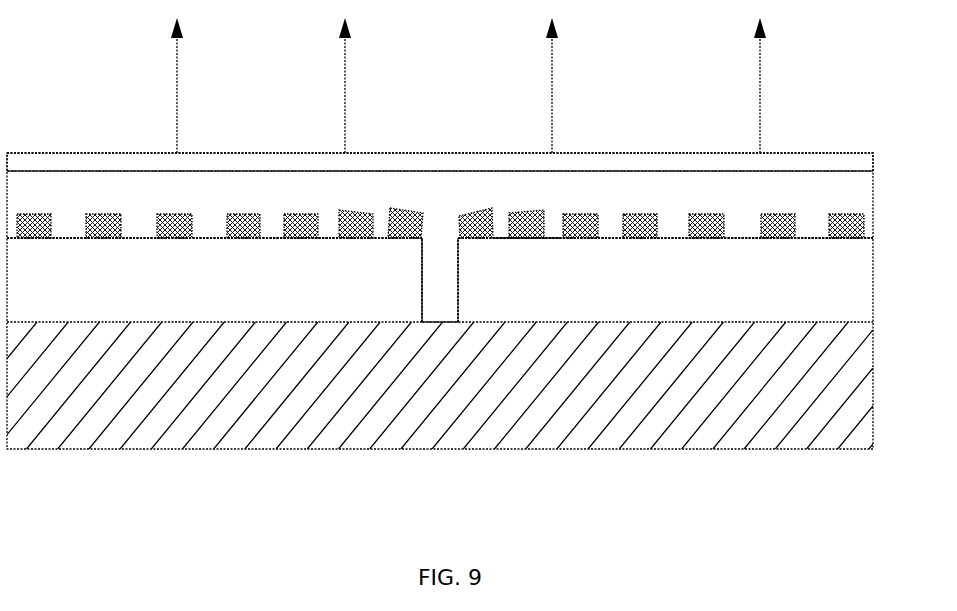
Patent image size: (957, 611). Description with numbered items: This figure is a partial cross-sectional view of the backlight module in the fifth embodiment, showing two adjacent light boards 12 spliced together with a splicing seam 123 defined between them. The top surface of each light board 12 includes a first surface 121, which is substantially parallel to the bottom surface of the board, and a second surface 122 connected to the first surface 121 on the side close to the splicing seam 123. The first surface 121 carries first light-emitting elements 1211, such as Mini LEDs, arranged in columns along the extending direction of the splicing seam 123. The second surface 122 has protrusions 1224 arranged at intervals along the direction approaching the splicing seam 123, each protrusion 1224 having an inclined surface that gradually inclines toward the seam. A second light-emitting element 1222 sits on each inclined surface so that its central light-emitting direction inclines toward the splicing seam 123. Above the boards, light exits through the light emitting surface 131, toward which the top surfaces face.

The light board 12 is at (207, 290).
The first surface 121 is at (139, 252).
The first light-emitting element 1211 is at (170, 222).
The second surface 122 is at (373, 252).
The second light-emitting element 1222 is at (300, 228).
The protrusion 1224 is at (294, 252).
The splicing seam 123 is at (440, 300).
The light emitting surface 131 is at (634, 148).